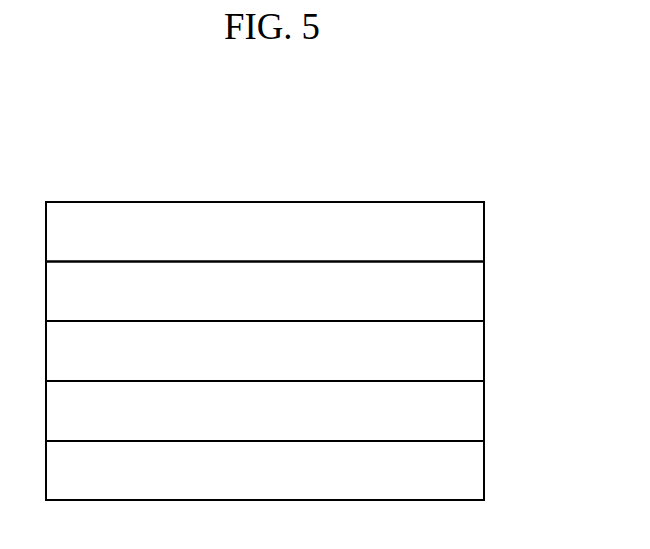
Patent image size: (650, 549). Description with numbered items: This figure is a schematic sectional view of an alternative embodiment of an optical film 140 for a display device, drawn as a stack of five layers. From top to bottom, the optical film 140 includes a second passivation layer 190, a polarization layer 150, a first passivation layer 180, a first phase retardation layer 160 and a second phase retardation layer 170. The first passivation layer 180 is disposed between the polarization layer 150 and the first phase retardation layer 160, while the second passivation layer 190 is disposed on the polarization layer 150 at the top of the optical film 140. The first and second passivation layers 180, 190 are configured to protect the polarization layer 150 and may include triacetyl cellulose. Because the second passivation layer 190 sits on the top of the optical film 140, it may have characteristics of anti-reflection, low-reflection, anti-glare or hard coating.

The optical film 140 is at (297, 148).
The second passivation layer 190 is at (472, 232).
The polarization layer 150 is at (472, 292).
The first passivation layer 180 is at (472, 352).
The first phase retardation layer 160 is at (472, 412).
The second phase retardation layer 170 is at (472, 471).